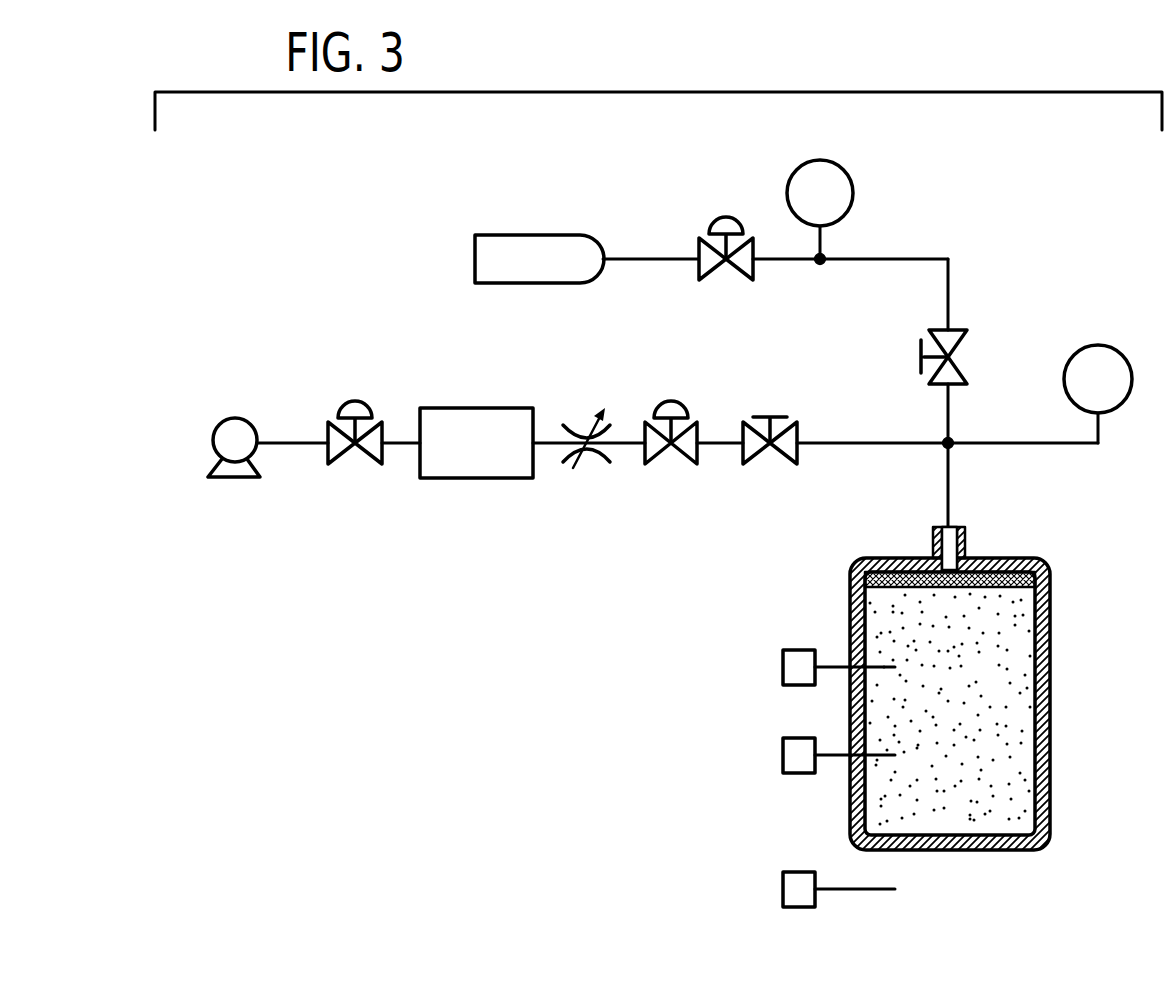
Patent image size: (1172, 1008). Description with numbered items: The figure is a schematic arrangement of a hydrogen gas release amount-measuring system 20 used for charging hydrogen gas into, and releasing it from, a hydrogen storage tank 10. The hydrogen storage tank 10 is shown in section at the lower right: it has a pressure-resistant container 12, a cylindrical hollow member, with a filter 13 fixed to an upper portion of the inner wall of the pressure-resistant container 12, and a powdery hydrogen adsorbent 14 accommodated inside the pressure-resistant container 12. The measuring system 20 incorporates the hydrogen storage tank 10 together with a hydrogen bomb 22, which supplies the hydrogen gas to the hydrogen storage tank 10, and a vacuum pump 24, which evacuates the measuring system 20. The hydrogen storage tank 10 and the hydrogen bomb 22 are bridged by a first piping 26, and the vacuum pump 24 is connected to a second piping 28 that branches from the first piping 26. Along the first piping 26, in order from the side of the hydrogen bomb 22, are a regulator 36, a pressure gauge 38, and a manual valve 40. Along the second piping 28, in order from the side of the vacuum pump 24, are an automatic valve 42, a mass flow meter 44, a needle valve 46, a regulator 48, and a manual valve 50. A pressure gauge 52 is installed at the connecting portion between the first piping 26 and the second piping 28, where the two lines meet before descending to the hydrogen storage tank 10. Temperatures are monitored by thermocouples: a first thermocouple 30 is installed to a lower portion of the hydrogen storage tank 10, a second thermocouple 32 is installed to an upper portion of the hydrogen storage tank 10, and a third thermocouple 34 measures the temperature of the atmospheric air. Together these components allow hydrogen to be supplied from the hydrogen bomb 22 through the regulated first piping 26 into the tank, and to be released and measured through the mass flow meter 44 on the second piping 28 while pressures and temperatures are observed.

The hydrogen storage tank 10 is at (940, 675).
The pressure-resistant container 12 is at (1044, 701).
The filter 13 is at (989, 558).
The hydrogen adsorbent 14 is at (905, 803).
The hydrogen gas release amount-measuring system 20 is at (1058, 200).
The hydrogen bomb 22 is at (538, 235).
The vacuum pump 24 is at (235, 417).
The first piping 26 is at (952, 483).
The second piping 28 is at (845, 442).
The first thermocouple 30 is at (780, 757).
The second thermocouple 32 is at (780, 669).
The third thermocouple 34 is at (780, 891).
The regulator 36 is at (724, 217).
The pressure gauge 38 is at (819, 160).
The manual valve 40 is at (970, 353).
The automatic valve 42 is at (355, 401).
The mass flow meter 44 is at (498, 408).
The needle valve 46 is at (590, 408).
The regulator 48 is at (670, 401).
The manual valve 50 is at (770, 416).
The pressure gauge 52 is at (1096, 345).